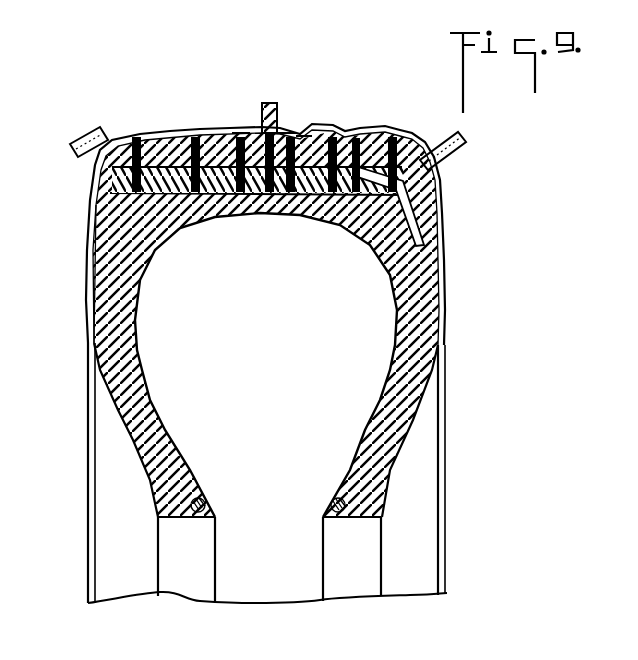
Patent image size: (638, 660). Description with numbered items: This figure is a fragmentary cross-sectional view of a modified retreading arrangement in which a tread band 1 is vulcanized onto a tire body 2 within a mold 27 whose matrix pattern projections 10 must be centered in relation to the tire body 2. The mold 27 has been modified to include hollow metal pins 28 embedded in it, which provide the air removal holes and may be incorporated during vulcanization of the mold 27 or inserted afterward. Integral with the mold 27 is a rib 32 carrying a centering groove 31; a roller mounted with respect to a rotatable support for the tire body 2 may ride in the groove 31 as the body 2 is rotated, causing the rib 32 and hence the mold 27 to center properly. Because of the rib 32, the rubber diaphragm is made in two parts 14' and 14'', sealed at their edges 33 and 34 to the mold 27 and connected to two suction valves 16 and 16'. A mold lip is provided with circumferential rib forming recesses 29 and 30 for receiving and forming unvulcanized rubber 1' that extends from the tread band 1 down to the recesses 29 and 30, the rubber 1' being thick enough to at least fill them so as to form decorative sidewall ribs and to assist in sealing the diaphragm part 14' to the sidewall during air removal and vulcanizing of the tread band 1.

The tread band 1 is at (267, 367).
The unvulcanized rubber 1' is at (67, 273).
The tire body 2 is at (403, 322).
The matrix pattern projections 10 is at (282, 205).
The diaphragm part 14' is at (434, 206).
The diaphragm part 14'' is at (239, 234).
The suction valve 16 is at (462, 151).
The suction valve 16' is at (92, 119).
The mold 27 is at (360, 130).
The hollow metal pins 28 is at (175, 131).
The rib forming recess 29 is at (88, 248).
The rib forming recess 30 is at (87, 267).
The centering groove 31 is at (264, 103).
The rib 32 is at (285, 130).
The edge 33 is at (237, 130).
The edge 34 is at (298, 135).